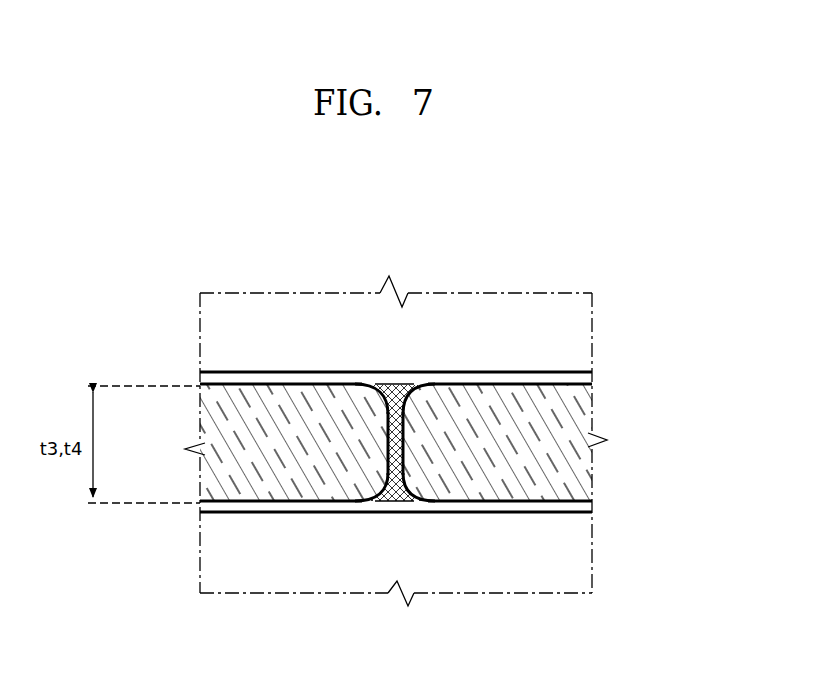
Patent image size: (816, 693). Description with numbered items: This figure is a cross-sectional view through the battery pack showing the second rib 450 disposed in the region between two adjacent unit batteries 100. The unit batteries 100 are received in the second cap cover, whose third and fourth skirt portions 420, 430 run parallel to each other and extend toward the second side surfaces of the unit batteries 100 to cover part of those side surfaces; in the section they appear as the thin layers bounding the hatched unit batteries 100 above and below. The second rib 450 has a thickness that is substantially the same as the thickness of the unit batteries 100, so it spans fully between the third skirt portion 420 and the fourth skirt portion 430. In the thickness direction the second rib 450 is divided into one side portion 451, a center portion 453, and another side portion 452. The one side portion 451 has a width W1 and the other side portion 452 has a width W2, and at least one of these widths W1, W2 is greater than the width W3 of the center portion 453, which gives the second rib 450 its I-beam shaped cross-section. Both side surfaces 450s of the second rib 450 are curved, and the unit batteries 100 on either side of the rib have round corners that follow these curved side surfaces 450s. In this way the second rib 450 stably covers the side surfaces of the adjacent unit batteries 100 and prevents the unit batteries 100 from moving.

The unit battery 100 is at (215, 410).
The third skirt portion 420 is at (483, 375).
The fourth skirt portion 430 is at (477, 510).
The second rib 450 is at (422, 435).
The one side portion 451 is at (420, 393).
The another side portion 452 is at (412, 490).
The center portion 453 is at (407, 432).
The side surfaces 450s is at (406, 467).
The width of one side portion W1 is at (375, 392).
The width of another side portion W2 is at (375, 492).
The width of center portion W3 is at (428, 446).